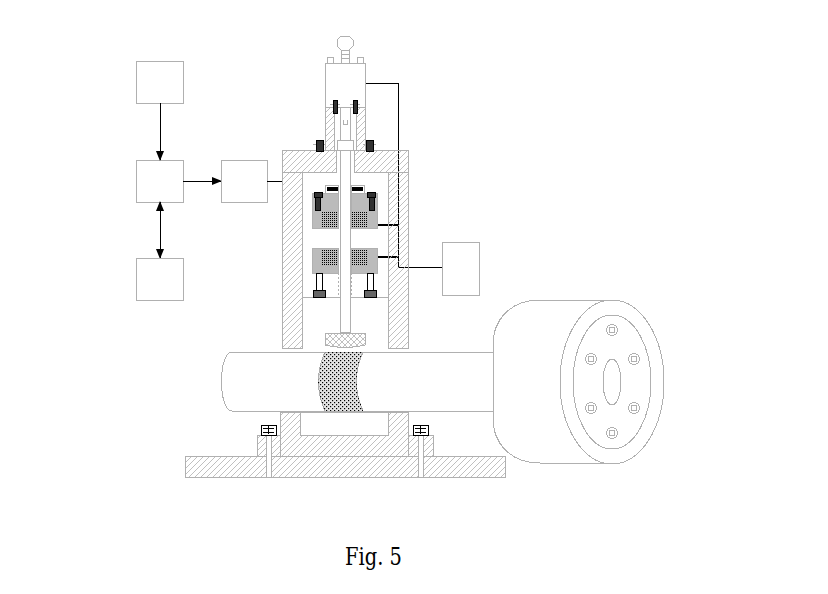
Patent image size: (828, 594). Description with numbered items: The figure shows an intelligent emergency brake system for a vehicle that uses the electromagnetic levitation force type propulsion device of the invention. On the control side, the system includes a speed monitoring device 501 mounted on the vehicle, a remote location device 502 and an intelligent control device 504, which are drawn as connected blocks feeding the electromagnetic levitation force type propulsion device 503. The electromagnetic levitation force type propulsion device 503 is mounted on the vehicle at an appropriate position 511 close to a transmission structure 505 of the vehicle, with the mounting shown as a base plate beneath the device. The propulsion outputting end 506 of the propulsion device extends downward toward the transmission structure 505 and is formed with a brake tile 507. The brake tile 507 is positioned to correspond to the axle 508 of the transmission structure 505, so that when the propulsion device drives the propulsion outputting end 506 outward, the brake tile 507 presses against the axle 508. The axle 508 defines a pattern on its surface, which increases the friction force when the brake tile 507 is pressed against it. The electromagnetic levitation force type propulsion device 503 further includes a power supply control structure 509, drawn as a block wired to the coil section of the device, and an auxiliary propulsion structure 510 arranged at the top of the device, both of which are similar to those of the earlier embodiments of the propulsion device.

The speed monitoring device 501 is at (136, 83).
The remote location device 502 is at (136, 280).
The electromagnetic levitation force type propulsion device 503 is at (257, 160).
The intelligent control device 504 is at (136, 182).
The transmission structure 505 is at (452, 407).
The propulsion outputting end 506 is at (342, 309).
The brake tile 507 is at (332, 342).
The axle 508 is at (342, 408).
The power supply control structure 509 is at (462, 243).
The auxiliary propulsion structure 510 is at (325, 72).
The appropriate position 511 is at (243, 460).